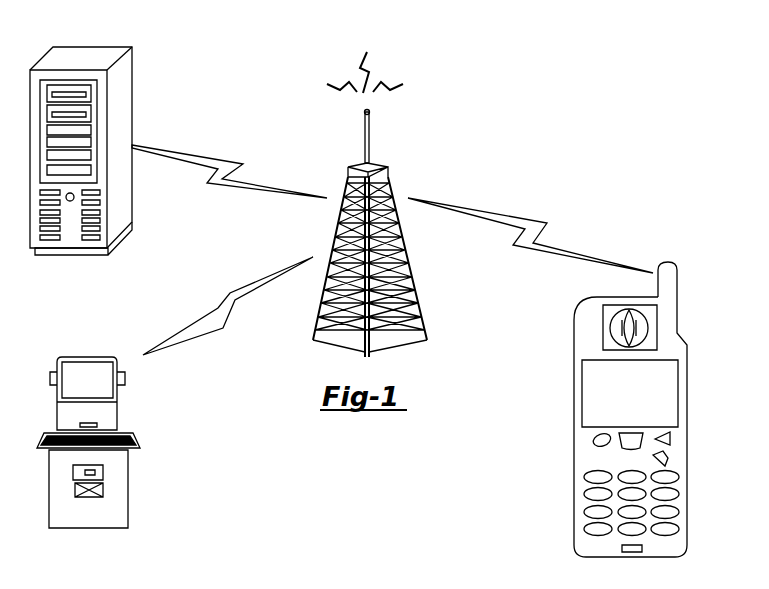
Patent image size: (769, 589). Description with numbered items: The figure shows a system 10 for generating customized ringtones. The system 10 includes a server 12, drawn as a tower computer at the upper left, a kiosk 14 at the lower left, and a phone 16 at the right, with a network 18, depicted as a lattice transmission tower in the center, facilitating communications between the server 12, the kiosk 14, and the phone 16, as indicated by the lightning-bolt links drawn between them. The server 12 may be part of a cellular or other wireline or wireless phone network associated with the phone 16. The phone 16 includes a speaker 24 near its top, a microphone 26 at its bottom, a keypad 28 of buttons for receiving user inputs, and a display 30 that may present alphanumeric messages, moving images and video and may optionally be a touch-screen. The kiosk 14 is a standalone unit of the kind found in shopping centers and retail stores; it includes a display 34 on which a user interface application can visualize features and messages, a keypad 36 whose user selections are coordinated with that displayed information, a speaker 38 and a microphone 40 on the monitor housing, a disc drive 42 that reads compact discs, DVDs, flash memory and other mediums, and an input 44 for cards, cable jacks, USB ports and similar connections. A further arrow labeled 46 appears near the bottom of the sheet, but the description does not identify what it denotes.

The system 10 is at (498, 103).
The server 12 is at (108, 47).
The kiosk 14 is at (97, 355).
The phone 16 is at (668, 262).
The network 18 is at (406, 247).
The speaker 24 is at (657, 327).
The microphone 26 is at (647, 558).
The keypad 28 is at (679, 475).
The display 30 is at (681, 393).
The display 34 is at (115, 390).
The keypad 36 is at (137, 438).
The speaker 38 is at (50, 380).
The microphone 40 is at (87, 423).
The disc drive 42 is at (73, 472).
The input 44 is at (75, 488).
The network connection 46 is at (237, 588).